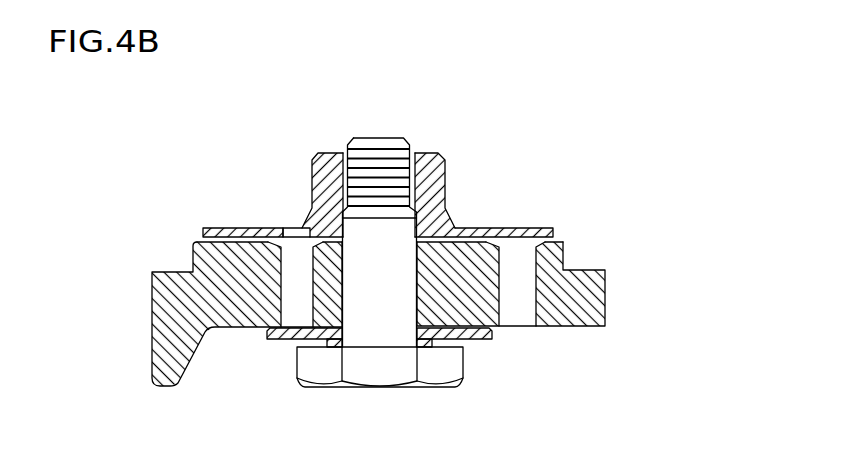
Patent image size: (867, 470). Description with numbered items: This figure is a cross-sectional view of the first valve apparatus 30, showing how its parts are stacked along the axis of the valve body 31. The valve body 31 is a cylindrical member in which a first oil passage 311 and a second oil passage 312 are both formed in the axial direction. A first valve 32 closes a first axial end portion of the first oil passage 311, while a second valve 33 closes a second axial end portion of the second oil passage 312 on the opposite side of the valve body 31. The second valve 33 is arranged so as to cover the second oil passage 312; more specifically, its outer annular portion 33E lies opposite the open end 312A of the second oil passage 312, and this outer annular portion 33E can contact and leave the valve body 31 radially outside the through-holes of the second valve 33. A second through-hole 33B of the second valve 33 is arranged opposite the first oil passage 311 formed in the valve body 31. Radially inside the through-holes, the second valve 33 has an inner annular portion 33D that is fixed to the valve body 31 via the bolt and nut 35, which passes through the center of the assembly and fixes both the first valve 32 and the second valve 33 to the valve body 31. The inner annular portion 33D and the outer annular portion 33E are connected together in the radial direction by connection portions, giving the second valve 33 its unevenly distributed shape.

The first valve apparatus 30 is at (540, 142).
The valve body 31 is at (610, 291).
The first oil passage 311 is at (297, 308).
The second oil passage 312 is at (522, 313).
The open end 312A is at (220, 240).
The first valve 32 is at (473, 342).
The second valve 33 is at (562, 226).
The second through-hole 33B is at (297, 228).
The inner annular portion 33D is at (427, 232).
The outer annular portion 33E is at (235, 228).
The bolt and nut 35 is at (375, 138).